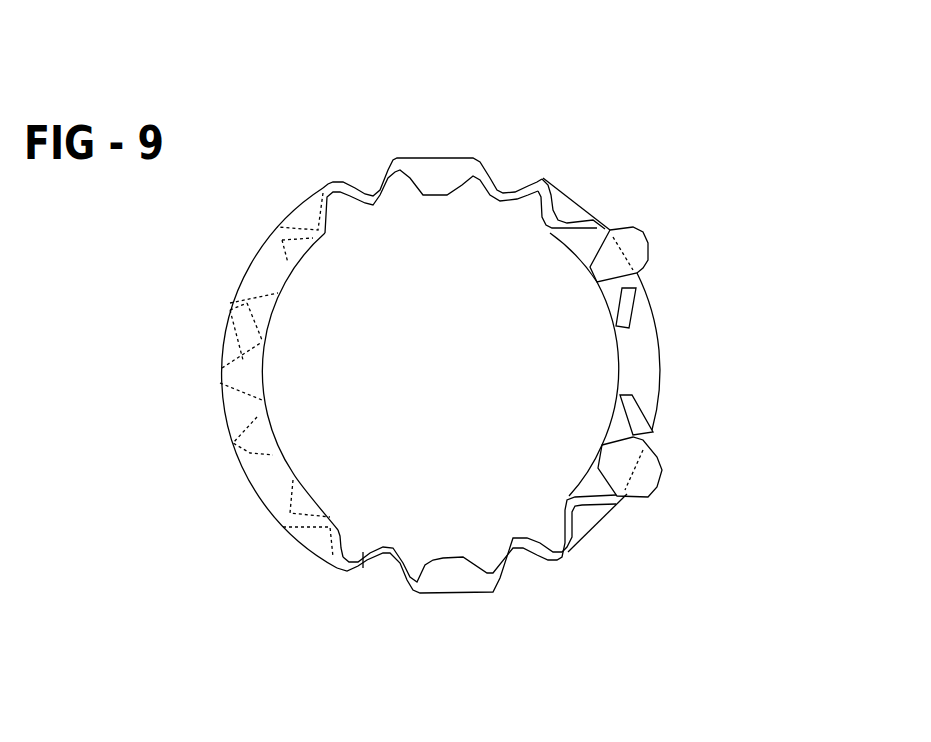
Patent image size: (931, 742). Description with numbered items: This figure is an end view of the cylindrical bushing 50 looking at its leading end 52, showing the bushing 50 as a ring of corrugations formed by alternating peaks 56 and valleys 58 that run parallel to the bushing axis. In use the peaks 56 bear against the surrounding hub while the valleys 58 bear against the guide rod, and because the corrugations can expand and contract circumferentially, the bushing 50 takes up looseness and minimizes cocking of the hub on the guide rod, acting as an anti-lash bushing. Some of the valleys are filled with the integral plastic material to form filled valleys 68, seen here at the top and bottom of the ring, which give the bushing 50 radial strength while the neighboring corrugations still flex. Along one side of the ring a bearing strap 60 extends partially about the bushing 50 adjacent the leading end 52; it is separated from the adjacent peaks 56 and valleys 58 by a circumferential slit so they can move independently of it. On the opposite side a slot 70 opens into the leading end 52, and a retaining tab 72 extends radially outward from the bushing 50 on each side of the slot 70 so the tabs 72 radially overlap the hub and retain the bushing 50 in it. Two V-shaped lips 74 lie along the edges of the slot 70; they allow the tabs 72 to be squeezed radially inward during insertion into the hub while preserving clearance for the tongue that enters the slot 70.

The cylindrical bushing 50 is at (517, 175).
The leading end 52 is at (363, 566).
The peaks 56 is at (543, 177).
The valleys 58 is at (513, 540).
The bearing strap 60 is at (263, 481).
The filled valleys 68 is at (431, 170).
The slot 70 is at (640, 363).
The retaining tab 72 is at (640, 245).
The V-shaped lips 74 is at (614, 318).